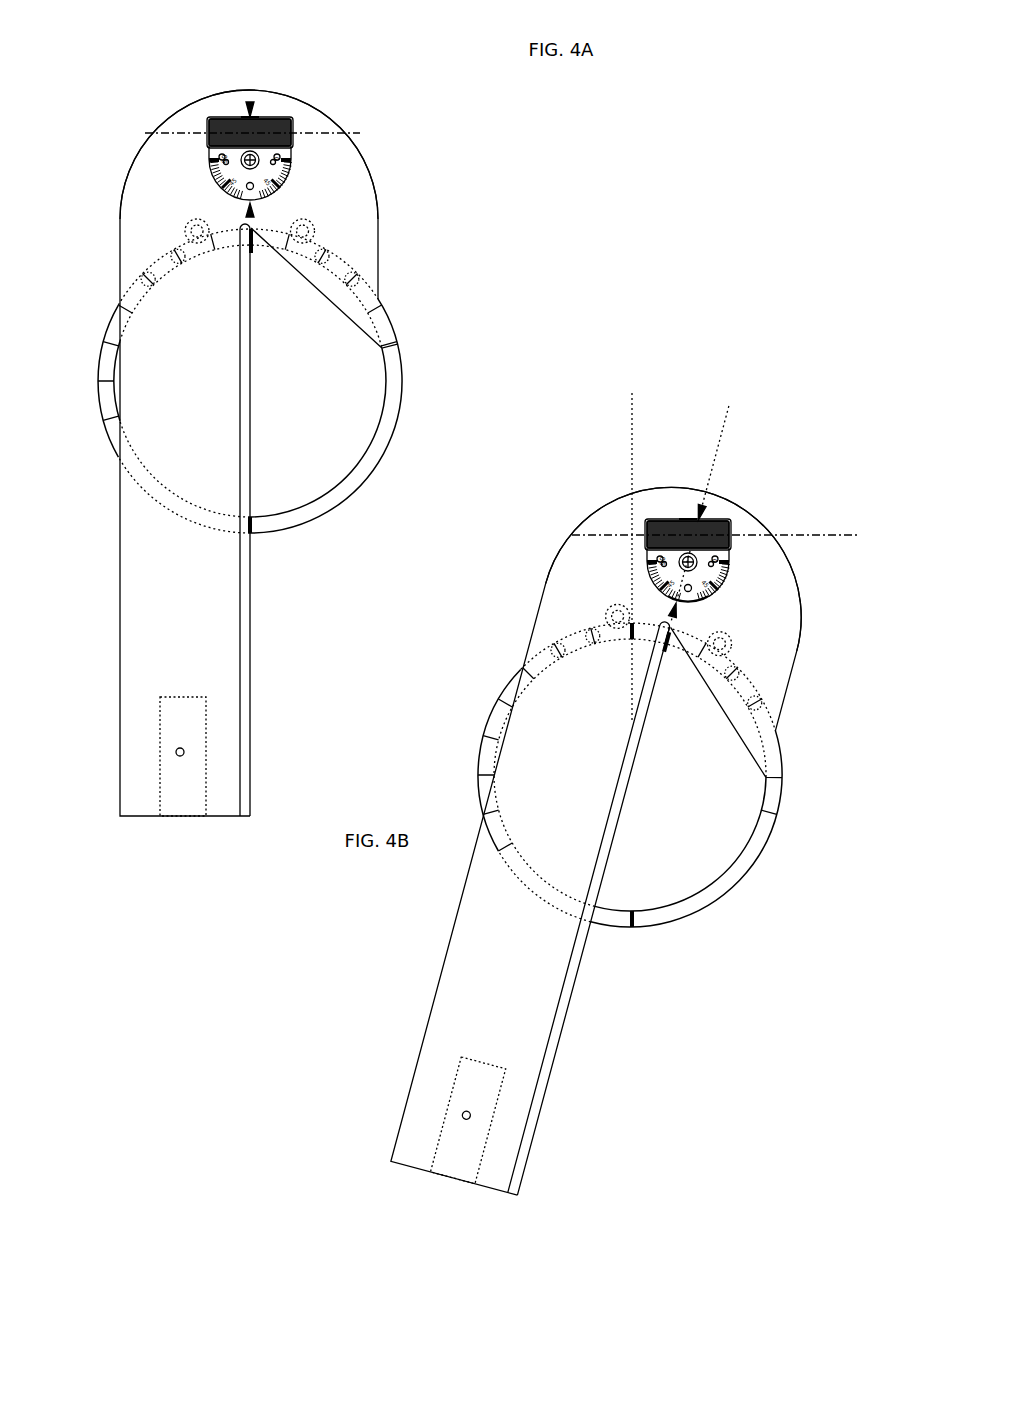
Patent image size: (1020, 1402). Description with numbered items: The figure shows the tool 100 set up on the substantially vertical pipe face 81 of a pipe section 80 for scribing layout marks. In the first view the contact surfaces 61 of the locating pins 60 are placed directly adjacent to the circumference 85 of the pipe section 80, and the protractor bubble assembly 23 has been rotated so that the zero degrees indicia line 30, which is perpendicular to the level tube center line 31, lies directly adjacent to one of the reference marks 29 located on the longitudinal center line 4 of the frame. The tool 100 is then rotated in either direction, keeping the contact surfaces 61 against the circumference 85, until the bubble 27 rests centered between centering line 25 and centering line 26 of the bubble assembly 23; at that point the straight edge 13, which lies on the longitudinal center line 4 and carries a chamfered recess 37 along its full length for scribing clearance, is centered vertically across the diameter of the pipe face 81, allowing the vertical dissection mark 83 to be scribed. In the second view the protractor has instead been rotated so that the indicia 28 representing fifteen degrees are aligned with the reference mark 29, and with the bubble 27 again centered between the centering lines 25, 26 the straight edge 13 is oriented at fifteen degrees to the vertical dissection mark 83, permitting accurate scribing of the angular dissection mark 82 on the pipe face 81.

In FIG. 4A, the tool 100 is at (102, 106).
In FIG. 4B, the tool 100 is at (603, 402).
In FIG. 4B, the longitudinal center line 4 is at (733, 422).
In FIG. 4A, the straight edge 13 is at (250, 572).
In FIG. 4B, the straight edge 13 is at (580, 968).
In FIG. 4A, the liquid bubble assembly 23 is at (210, 128).
In FIG. 4B, the liquid bubble assembly 23 is at (730, 532).
In FIG. 4A, the centering line 25 is at (216, 124).
In FIG. 4B, the centering line 25 is at (670, 527).
In FIG. 4A, the centering line 26 is at (283, 122).
In FIG. 4B, the centering line 26 is at (723, 527).
In FIG. 4A, the bubble 27 is at (260, 118).
In FIG. 4B, the bubble 27 is at (693, 527).
In FIG. 4B, the indicia 28 is at (700, 602).
In FIG. 4A, the reference marks 29 is at (250, 100).
In FIG. 4B, the reference marks 29 is at (667, 597).
In FIG. 4A, the zero degrees indicia line 30 is at (293, 191).
In FIG. 4A, the level tube center line 31 is at (290, 124).
In FIG. 4B, the level tube center line 31 is at (817, 535).
In FIG. 4A, the chamfered recess 37 is at (247, 645).
In FIG. 4B, the chamfered recess 37 is at (553, 1040).
In FIG. 4A, the locating pins 60 is at (306, 229).
In FIG. 4B, the locating pins 60 is at (608, 613).
In FIG. 4A, the contact surfaces 61 is at (313, 246).
In FIG. 4B, the contact surfaces 61 is at (630, 631).
In FIG. 4A, the pipe section 80 is at (397, 467).
In FIG. 4B, the pipe section 80 is at (457, 770).
In FIG. 4A, the pipe face 81 is at (103, 425).
In FIG. 4B, the pipe face 81 is at (735, 877).
In FIG. 4A, the angular dissection mark 82 is at (395, 355).
In FIG. 4B, the angular dissection mark 82 is at (690, 652).
In FIG. 4A, the vertical dissection mark 83 is at (253, 240).
In FIG. 4B, the vertical dissection mark 83 is at (632, 638).
In FIG. 4A, the circumference 85 is at (402, 413).